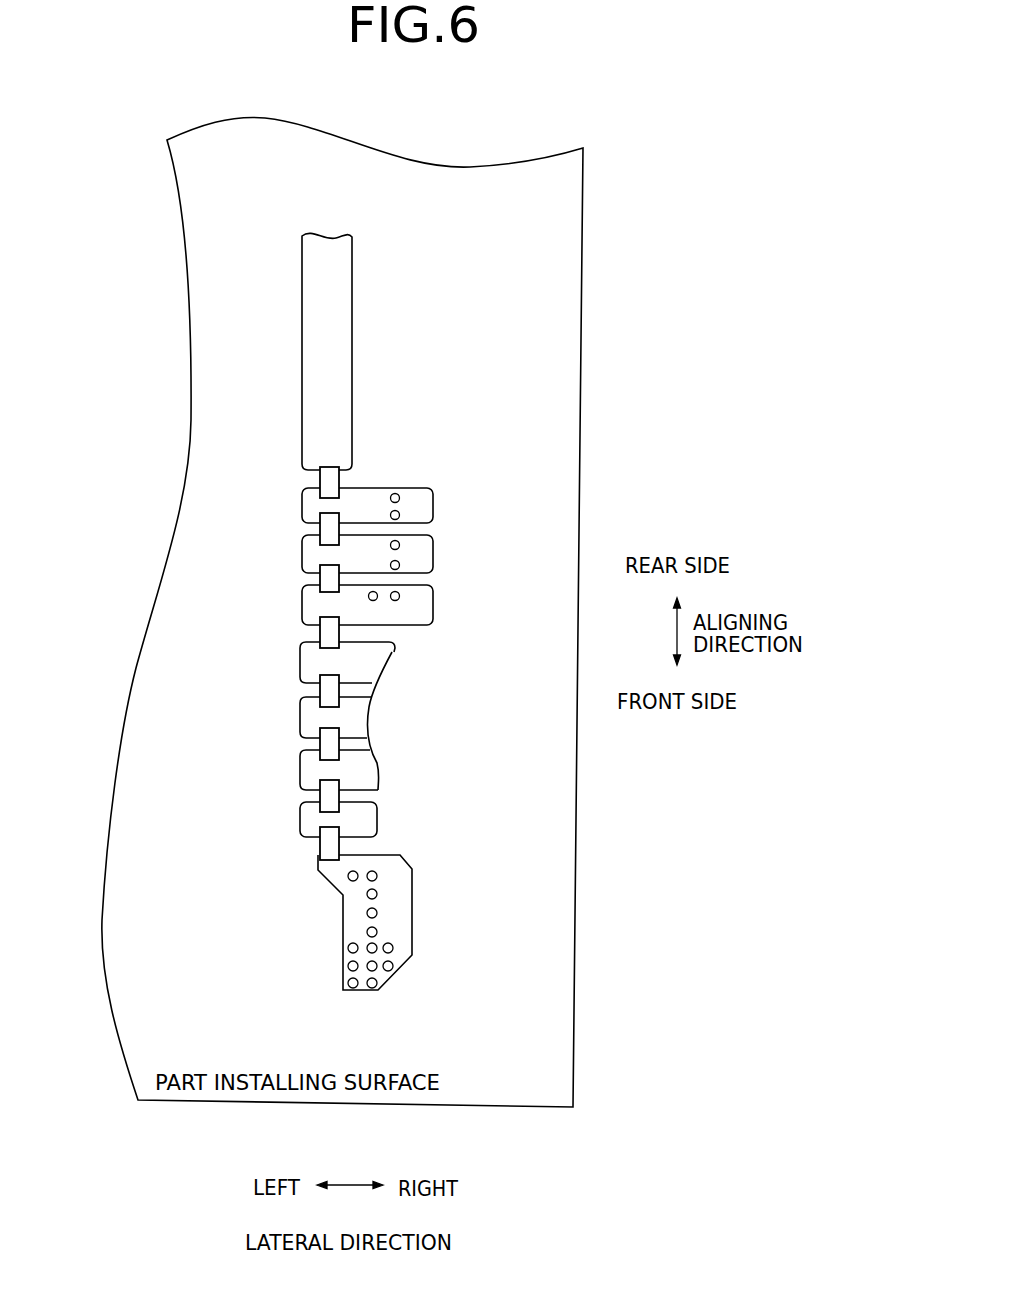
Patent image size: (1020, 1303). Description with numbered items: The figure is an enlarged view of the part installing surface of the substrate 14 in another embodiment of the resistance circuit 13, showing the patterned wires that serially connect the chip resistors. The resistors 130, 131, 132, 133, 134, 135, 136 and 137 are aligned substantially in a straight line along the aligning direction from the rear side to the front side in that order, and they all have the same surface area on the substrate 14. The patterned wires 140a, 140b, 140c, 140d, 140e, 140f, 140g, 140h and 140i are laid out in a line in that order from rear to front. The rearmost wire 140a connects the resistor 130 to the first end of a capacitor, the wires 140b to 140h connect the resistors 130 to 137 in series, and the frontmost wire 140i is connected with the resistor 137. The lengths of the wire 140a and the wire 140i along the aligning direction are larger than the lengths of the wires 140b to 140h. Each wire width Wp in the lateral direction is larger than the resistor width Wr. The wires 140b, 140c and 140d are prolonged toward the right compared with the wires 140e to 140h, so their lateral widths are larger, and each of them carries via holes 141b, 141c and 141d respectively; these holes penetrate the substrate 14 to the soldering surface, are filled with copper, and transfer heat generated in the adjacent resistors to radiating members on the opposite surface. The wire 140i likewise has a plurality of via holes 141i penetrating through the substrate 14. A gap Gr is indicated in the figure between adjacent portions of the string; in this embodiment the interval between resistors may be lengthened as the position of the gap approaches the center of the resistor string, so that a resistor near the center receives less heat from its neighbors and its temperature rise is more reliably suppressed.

The resistance circuit 13 is at (402, 621).
The substrate 14 is at (560, 205).
The resistor 130 is at (333, 478).
The resistor 131 is at (335, 525).
The resistor 132 is at (328, 585).
The resistor 133 is at (330, 638).
The resistor 134 is at (330, 695).
The resistor 135 is at (330, 748).
The resistor 136 is at (330, 800).
The resistor 137 is at (330, 850).
The patterned wire 140a is at (315, 373).
The patterned wire 140b is at (313, 495).
The patterned wire 140c is at (313, 556).
The patterned wire 140d is at (313, 604).
The patterned wire 140e is at (358, 655).
The patterned wire 140f is at (310, 728).
The patterned wire 140g is at (310, 765).
The patterned wire 140h is at (310, 812).
The patterned wire 140i is at (353, 908).
The via holes 141b is at (399, 513).
The via holes 141c is at (399, 546).
The via holes 141d is at (376, 600).
The via holes 141i is at (389, 971).
The width of patterned wire Wp is at (490, 507).
The width of resistor Wr is at (397, 523).
The gap Gr is at (320, 646).